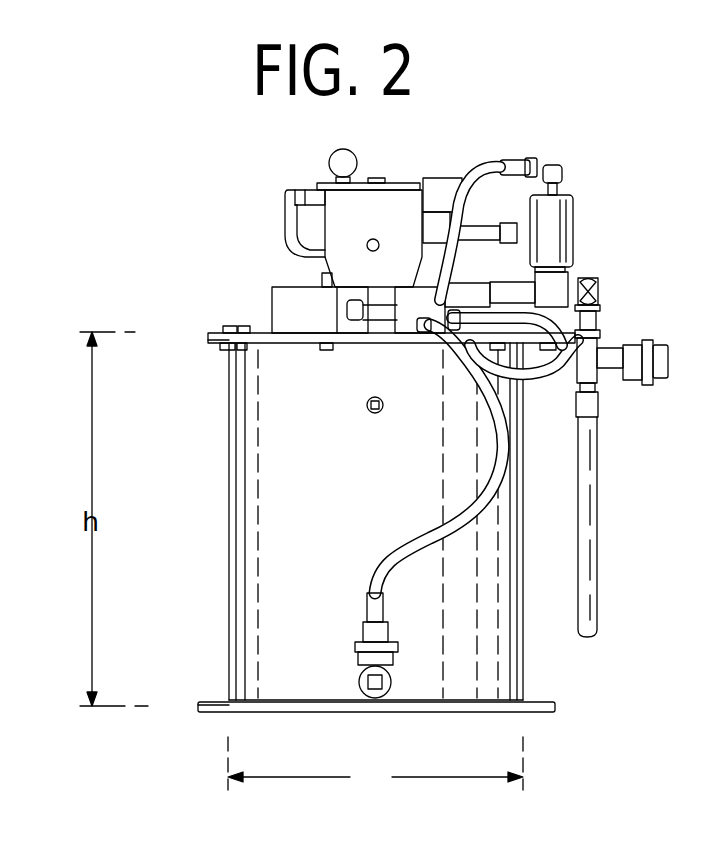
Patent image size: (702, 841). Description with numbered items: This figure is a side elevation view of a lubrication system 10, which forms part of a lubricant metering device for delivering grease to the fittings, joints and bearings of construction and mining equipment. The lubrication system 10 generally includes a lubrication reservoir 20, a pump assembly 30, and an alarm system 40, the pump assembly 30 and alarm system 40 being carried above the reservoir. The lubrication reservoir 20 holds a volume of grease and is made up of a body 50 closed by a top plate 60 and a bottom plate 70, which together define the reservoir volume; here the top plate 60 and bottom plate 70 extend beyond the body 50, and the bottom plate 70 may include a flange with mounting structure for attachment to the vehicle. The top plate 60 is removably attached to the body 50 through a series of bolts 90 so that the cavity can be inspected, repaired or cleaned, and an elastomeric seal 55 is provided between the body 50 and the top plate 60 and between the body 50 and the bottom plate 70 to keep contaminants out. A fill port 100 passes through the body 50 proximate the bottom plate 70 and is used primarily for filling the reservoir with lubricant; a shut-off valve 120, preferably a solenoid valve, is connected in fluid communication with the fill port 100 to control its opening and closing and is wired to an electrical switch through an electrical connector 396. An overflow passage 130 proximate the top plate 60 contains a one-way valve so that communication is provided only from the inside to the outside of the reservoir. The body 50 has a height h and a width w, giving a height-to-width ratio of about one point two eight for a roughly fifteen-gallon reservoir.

The lubrication system 10 is at (138, 198).
The lubrication reservoir 20 is at (334, 521).
The pump assembly 30 is at (582, 232).
The alarm system 40 is at (297, 300).
The body 50 is at (245, 515).
The seal 55 is at (207, 338).
The top plate 60 is at (257, 333).
The bottom plate 70 is at (545, 712).
The bolts 90 is at (223, 328).
The fill port 100 is at (375, 760).
The shut-off valve 120 is at (353, 647).
The overflow passage 130 is at (384, 403).
The electrical connector 396 is at (420, 540).